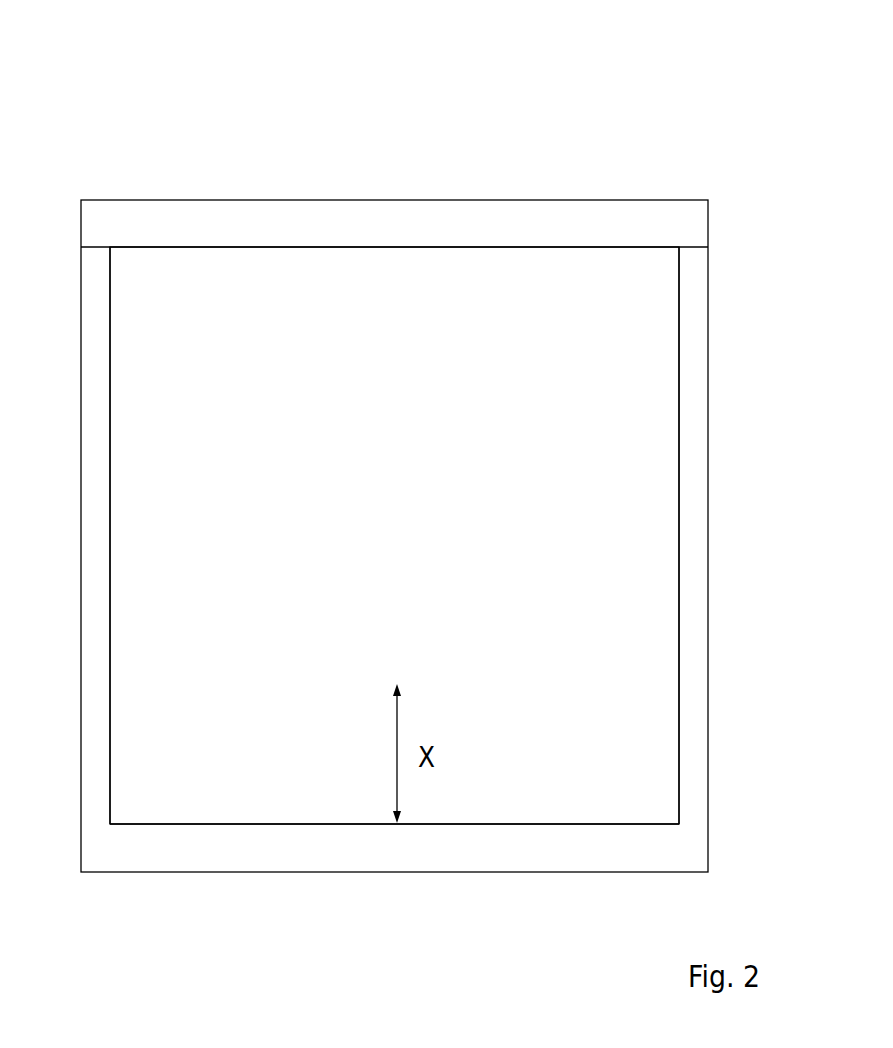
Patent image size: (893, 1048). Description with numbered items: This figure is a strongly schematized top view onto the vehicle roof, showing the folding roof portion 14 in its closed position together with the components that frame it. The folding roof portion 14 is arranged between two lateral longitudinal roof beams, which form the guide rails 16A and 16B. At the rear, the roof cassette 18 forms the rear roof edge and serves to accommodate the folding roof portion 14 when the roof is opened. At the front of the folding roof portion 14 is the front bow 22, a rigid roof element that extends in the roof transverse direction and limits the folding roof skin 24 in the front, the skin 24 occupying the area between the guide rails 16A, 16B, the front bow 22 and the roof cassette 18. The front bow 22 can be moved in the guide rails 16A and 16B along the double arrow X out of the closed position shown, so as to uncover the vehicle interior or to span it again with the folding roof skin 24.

The folding roof portion 14 is at (394, 442).
The rear roof cassette 18 is at (344, 222).
The guide rail 16A is at (697, 642).
The guide rail 16B is at (92, 662).
The front bow 22 is at (540, 843).
The folding roof skin 24 is at (410, 561).